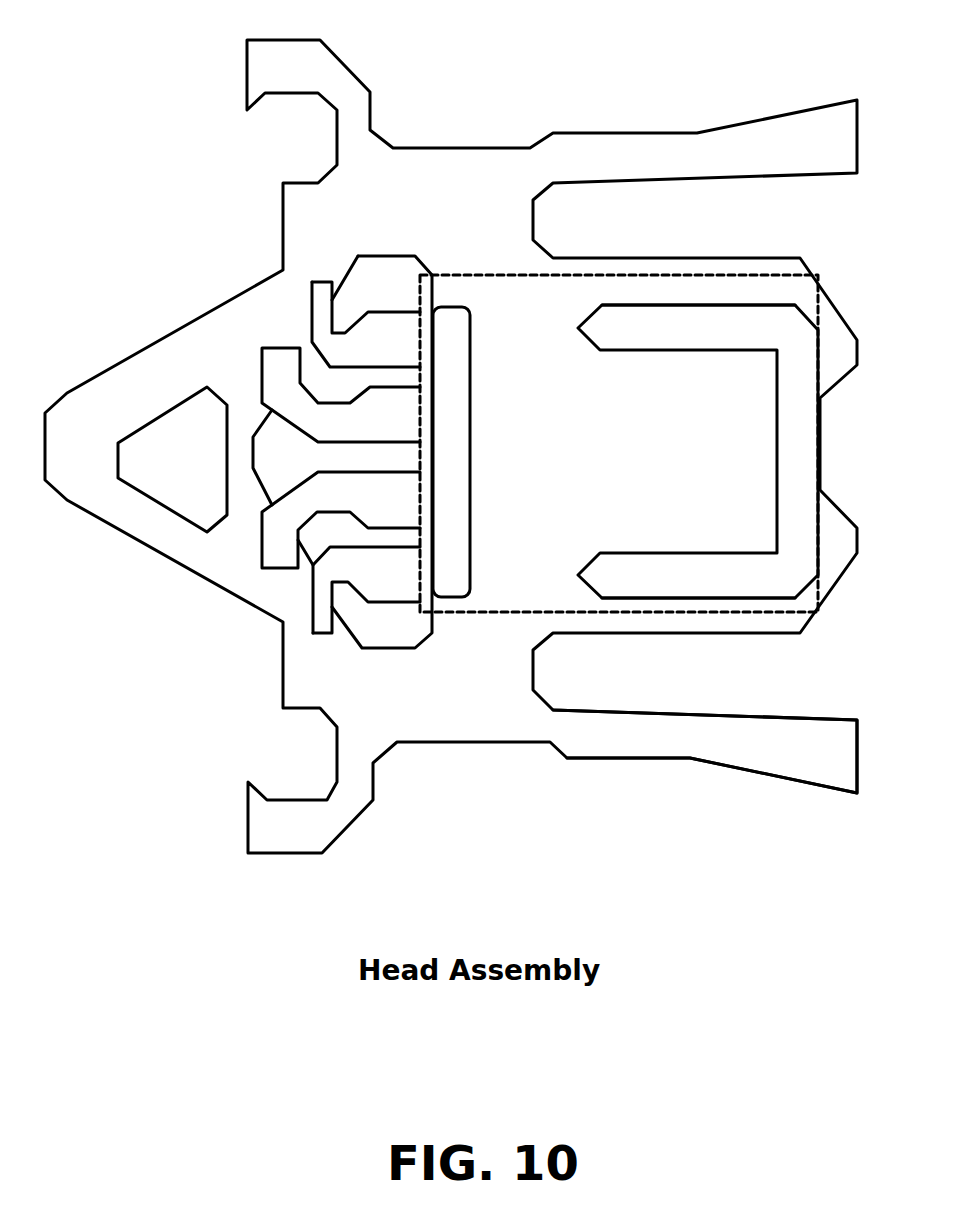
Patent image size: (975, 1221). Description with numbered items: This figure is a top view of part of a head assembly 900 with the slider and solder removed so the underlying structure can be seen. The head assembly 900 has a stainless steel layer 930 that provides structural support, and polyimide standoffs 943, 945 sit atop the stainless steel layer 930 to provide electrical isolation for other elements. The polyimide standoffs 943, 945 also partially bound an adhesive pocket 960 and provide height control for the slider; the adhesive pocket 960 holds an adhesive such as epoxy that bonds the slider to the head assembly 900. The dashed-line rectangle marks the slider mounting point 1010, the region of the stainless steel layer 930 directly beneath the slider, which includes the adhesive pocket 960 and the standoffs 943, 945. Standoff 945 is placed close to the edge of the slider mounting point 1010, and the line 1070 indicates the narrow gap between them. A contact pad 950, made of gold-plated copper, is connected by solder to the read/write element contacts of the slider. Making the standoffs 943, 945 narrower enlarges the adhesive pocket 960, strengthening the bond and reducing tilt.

The head assembly 900 is at (624, 985).
The stainless steel layer 930 is at (428, 185).
The contact pad 950 is at (380, 338).
The polyimide standoff 943 is at (448, 597).
The polyimide standoff 945 is at (670, 580).
The adhesive pocket 960 is at (578, 397).
The slider mounting point 1010 is at (513, 612).
The gap 1070 is at (697, 290).